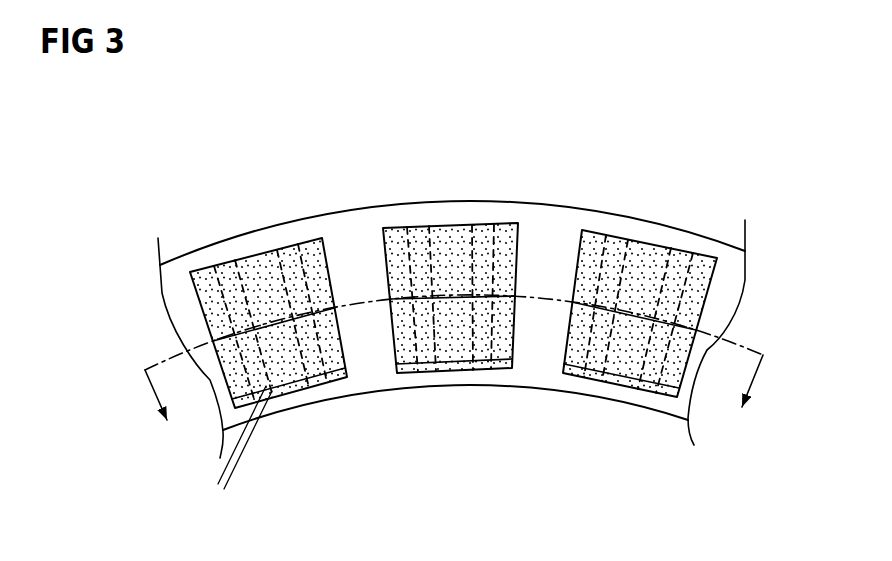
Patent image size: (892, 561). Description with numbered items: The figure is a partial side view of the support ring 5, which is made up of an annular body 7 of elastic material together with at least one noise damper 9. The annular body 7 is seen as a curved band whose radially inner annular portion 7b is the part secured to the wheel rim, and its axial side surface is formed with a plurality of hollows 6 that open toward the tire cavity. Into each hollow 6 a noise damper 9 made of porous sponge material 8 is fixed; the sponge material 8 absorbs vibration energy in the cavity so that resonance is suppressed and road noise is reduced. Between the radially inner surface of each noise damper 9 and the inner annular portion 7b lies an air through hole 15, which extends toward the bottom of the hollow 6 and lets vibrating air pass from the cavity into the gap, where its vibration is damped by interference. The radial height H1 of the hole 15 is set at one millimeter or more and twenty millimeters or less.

The support ring 5 is at (427, 91).
The annular body 7 is at (346, 242).
The radially inner annular portion 7b is at (290, 405).
The hollow 6 is at (462, 374).
The porous sponge material 8 is at (453, 319).
The noise damper 9 is at (447, 242).
The air through hole 15 is at (440, 373).
The radial height of the hole H1 is at (210, 458).